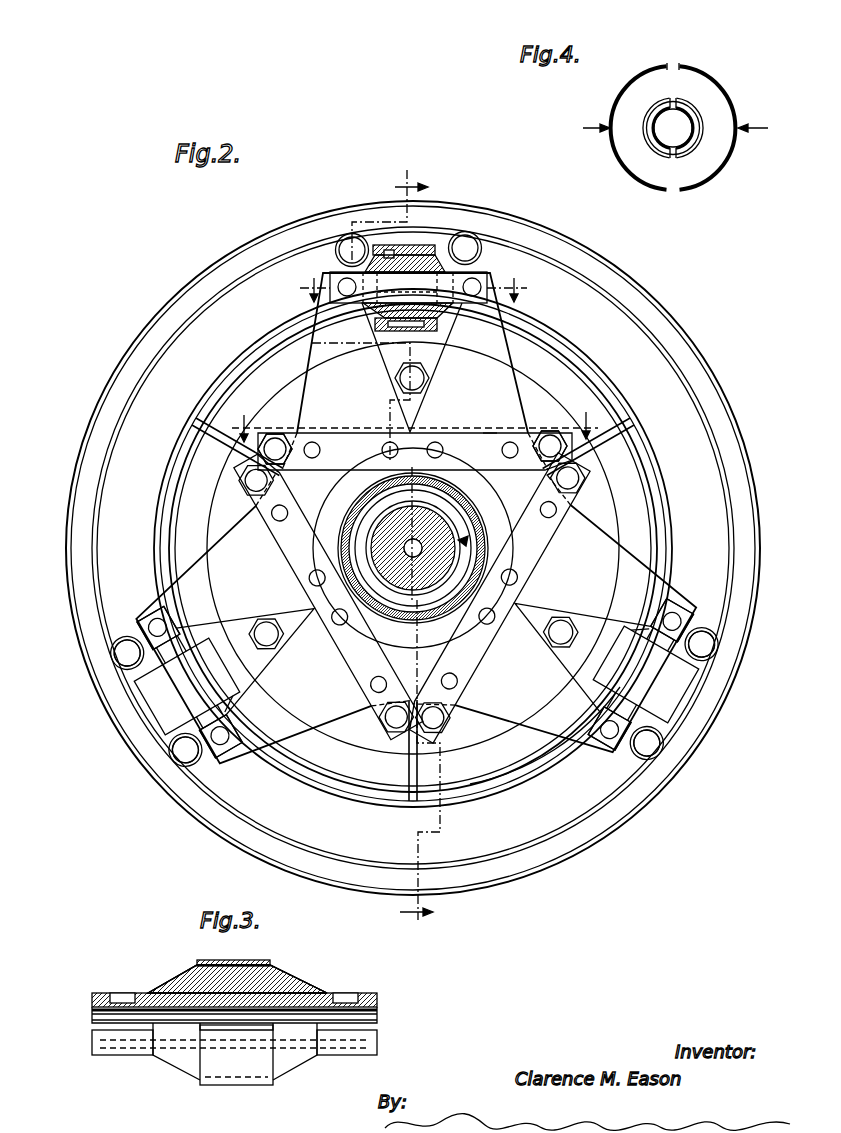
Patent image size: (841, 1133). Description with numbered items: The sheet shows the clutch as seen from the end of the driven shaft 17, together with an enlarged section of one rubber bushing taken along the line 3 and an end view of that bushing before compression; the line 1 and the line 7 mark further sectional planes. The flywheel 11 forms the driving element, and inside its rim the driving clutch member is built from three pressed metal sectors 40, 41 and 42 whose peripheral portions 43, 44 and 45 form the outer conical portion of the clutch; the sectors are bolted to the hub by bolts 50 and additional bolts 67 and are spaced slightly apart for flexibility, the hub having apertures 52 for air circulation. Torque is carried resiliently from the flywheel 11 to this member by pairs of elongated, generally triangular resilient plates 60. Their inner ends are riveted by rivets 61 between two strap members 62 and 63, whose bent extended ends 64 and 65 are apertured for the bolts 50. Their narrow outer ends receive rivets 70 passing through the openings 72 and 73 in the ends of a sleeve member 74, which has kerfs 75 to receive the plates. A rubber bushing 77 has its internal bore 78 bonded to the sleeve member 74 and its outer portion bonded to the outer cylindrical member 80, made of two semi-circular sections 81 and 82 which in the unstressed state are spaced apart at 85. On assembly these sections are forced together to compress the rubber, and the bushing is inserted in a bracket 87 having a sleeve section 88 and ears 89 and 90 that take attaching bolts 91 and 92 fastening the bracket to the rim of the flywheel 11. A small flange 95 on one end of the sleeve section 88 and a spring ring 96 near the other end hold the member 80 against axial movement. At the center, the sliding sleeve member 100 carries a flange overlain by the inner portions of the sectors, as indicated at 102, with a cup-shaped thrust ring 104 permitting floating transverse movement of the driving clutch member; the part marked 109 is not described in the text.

In FIG. 2, the flywheel 11 is at (206, 282).
In FIG. 2, the pressed metal sector 40 is at (578, 386).
In FIG. 2, the peripheral portion 43 is at (541, 352).
In FIG. 2, the peripheral portion 45 is at (342, 790).
In FIG. 2, the pressed metal sector 42 is at (413, 550).
In FIG. 2, the peripheral portion 44 is at (545, 745).
In FIG. 2, the pressed metal sector 41 is at (486, 738).
In FIG. 2, the outer end of driven shaft 17 is at (415, 612).
In FIG. 2, the sleeve member 100 is at (362, 522).
In FIG. 2, the radially inner portions of clutch sectors 102 is at (381, 481).
In FIG. 2, the key 109 is at (473, 540).
In FIG. 2, the thrust ring 104 is at (480, 476).
In FIG. 2, the resilient plate 60 is at (318, 358).
In FIG. 2, the spring ring 96 is at (388, 343).
In FIG. 2, the bolt 67 is at (430, 378).
In FIG. 2, the aperture 52 is at (365, 663).
In FIG. 2, the bolt 50 is at (278, 434).
In FIG. 2, the extended end 64 is at (268, 432).
In FIG. 2, the extended end 65 is at (556, 430).
In FIG. 2, the rivet 61 is at (316, 442).
In FIG. 2, the strap member 62 is at (466, 431).
In FIG. 2, the strap member 63 is at (490, 431).
In FIG. 2, the rivet 70 is at (340, 282).
In FIG. 2, the sleeve member 74 is at (372, 308).
In FIG. 4, the sleeve member 74 is at (651, 145).
In FIG. 3, the sleeve member 74 is at (242, 995).
In FIG. 2, the flange 95 is at (440, 324).
In FIG. 2, the semi-circular section 81 is at (405, 243).
In FIG. 4, the semi-circular section 81 is at (624, 89).
In FIG. 3, the semi-circular section 81 is at (228, 960).
In FIG. 2, the sleeve section 88 is at (427, 258).
In FIG. 2, the bracket 87 is at (452, 238).
In FIG. 2, the ear 89 is at (340, 240).
In FIG. 2, the ear 90 is at (483, 247).
In FIG. 2, the attaching bolt 91 is at (470, 237).
In FIG. 2, the attaching bolt 92 is at (352, 236).
In FIG. 2, the rubber bushing 77 is at (206, 630).
In FIG. 4, the rubber bushing 77 is at (712, 148).
In FIG. 3, the rubber bushing 77 is at (286, 982).
In FIG. 2, the section line 1- 1 is at (376, 543).
In FIG. 2, the section line 3- 3 is at (413, 290).
In FIG. 2, the section line 7- 7 is at (415, 426).
In FIG. 4, the semi-circular section 82 is at (727, 108).
In FIG. 3, the semi-circular section 82 is at (218, 1074).
In FIG. 4, the space 85 is at (673, 62).
In FIG. 3, the space 85 is at (200, 1027).
In FIG. 4, the kerf 75 is at (671, 160).
In FIG. 3, the kerf 75 is at (96, 1018).
In FIG. 3, the opening 72 is at (120, 995).
In FIG. 3, the internal bore 78 is at (190, 985).
In FIG. 3, the outer cylindrical member 80 is at (268, 950).
In FIG. 3, the opening 73 is at (113, 1060).